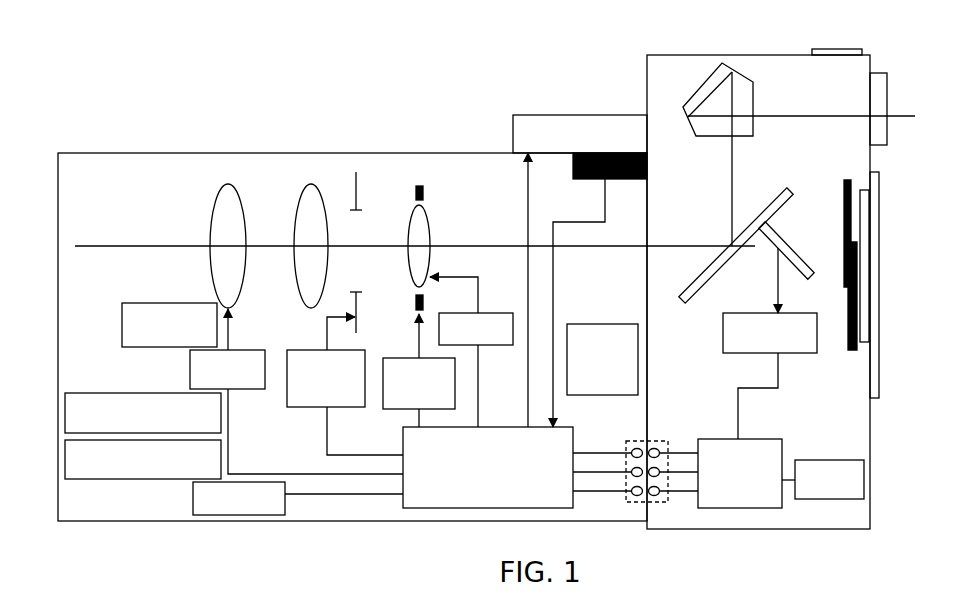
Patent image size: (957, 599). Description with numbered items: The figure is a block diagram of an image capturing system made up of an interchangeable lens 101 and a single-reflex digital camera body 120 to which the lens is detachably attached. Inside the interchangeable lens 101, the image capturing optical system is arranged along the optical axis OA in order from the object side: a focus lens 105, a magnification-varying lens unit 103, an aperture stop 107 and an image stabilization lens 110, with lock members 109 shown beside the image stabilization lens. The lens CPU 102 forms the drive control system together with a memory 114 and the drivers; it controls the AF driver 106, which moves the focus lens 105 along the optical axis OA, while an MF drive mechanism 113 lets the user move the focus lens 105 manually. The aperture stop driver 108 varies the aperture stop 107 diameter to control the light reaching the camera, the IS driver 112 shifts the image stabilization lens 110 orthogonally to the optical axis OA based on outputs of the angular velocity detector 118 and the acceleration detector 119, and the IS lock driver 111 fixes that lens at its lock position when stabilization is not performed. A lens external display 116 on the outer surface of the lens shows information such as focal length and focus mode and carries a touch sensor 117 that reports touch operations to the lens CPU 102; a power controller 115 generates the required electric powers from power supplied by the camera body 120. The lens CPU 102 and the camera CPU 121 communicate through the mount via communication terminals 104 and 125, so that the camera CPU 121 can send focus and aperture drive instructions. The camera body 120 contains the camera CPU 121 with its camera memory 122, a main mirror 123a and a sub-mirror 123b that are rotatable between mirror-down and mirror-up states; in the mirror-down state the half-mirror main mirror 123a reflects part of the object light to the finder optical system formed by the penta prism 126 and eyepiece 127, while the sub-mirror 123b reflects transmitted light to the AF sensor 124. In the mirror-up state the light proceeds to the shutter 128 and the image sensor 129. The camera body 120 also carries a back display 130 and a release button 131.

The interchangeable lens 101 is at (265, 153).
The lens CPU 102 is at (445, 509).
The magnification-varying lens unit 103 is at (294, 210).
The communication terminal 104 is at (632, 502).
The focus lens unit 105 is at (212, 210).
The AF driver 106 is at (243, 349).
The aperture stop 107 is at (358, 188).
The aperture stop driver 108 is at (357, 350).
The IS lock member 109 is at (425, 192).
The image stabilization lens unit 110 is at (430, 228).
The IS lock driver 111 is at (405, 409).
The IS driver 112 is at (487, 313).
The MF drive mechanism 113 is at (175, 348).
The memory 114 is at (240, 516).
The power controller 115 is at (576, 324).
The lens external display 116 is at (513, 135).
The touch sensor 117 is at (580, 181).
The angular velocity detector 118 is at (121, 479).
The acceleration detector 119 is at (78, 393).
The camera body 120 is at (762, 55).
The camera CPU 121 is at (760, 508).
The camera memory 122 is at (850, 460).
The main mirror 123a is at (786, 193).
The sub-mirror 123b is at (788, 240).
The AF sensor 124 is at (723, 340).
The communication terminal 125 is at (653, 503).
The penta prism 126 is at (755, 103).
The eyepiece 127 is at (873, 73).
The shutter 128 is at (853, 352).
The image sensor 129 is at (867, 323).
The back display 130 is at (875, 252).
The release button 131 is at (827, 48).
The optical axis OA is at (152, 246).